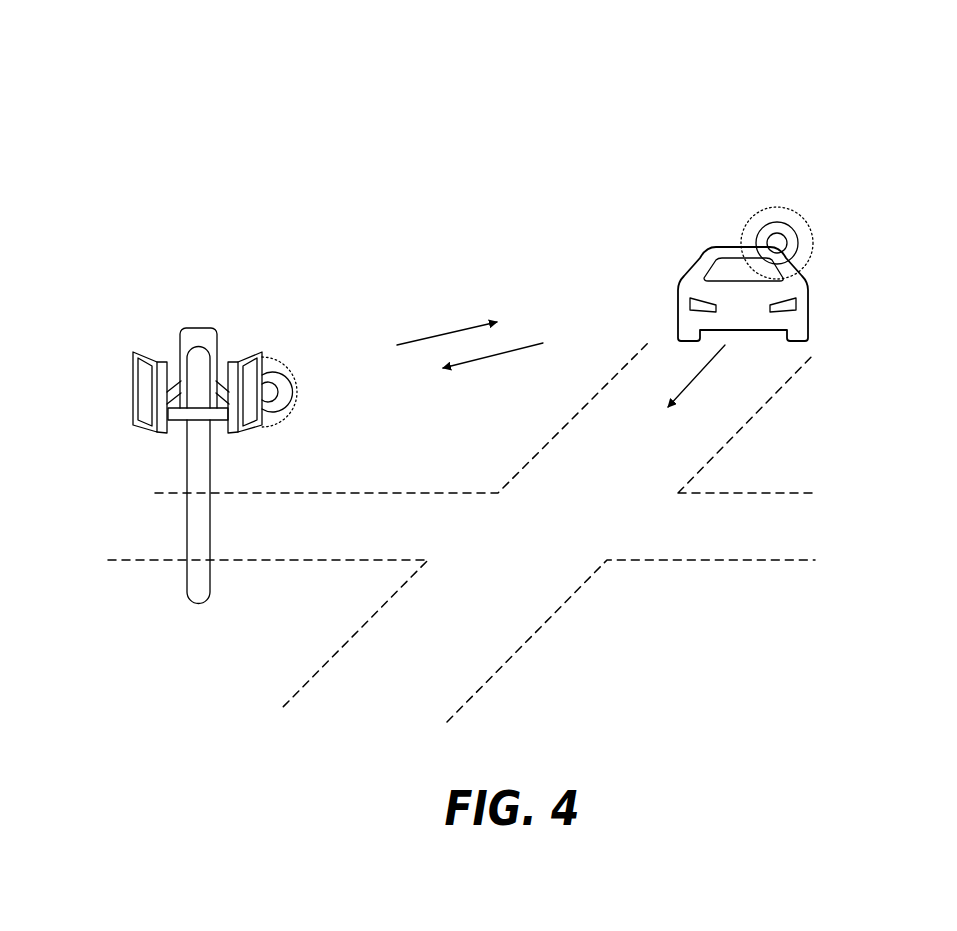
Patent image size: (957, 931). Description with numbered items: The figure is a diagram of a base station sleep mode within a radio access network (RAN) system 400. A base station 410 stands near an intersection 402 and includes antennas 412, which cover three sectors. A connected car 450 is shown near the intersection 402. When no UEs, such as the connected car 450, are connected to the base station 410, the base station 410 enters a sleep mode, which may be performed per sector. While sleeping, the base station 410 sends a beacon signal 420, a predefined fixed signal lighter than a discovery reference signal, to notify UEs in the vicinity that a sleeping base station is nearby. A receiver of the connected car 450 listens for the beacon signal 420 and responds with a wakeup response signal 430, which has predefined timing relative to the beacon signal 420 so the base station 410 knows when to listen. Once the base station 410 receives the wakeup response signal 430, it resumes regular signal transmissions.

The radio access network (RAN) system 400 is at (190, 127).
The intersection 402 is at (521, 547).
The base station 410 is at (185, 540).
The antennas 412 is at (198, 328).
The beacon signal 420 is at (442, 333).
The wakeup response signal (WRS) 430 is at (492, 358).
The connected car 450 is at (808, 288).